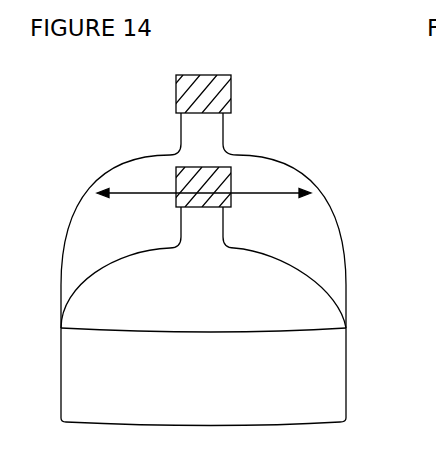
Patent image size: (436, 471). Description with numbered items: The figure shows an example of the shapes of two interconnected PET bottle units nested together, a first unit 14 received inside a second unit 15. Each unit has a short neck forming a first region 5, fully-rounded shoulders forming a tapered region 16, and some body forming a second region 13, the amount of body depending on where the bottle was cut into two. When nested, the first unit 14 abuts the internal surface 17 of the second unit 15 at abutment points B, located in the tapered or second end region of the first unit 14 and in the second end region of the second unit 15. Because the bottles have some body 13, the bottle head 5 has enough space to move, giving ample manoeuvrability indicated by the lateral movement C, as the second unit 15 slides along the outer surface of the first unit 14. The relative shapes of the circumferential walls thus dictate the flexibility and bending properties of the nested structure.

The first region 5 is at (243, 97).
The second region 13 is at (357, 277).
The first unit 14 is at (380, 353).
The second unit 15 is at (279, 122).
The tapered region 16 is at (307, 156).
The internal surface 17 is at (70, 276).
The abutment point B is at (55, 341).
The lateral movement C is at (122, 182).